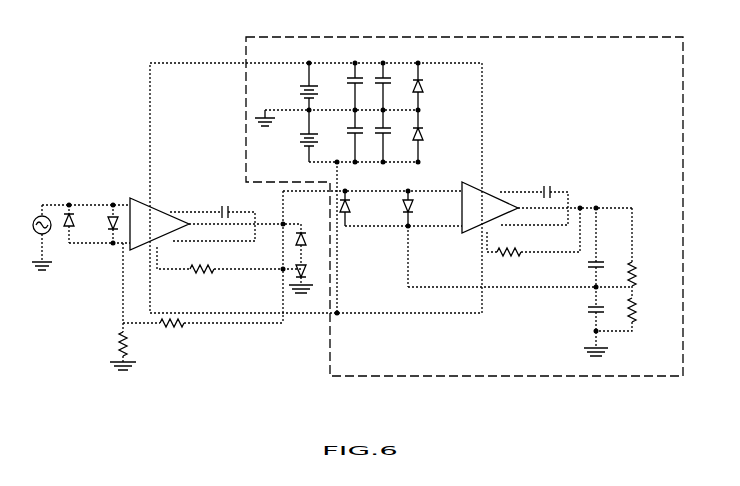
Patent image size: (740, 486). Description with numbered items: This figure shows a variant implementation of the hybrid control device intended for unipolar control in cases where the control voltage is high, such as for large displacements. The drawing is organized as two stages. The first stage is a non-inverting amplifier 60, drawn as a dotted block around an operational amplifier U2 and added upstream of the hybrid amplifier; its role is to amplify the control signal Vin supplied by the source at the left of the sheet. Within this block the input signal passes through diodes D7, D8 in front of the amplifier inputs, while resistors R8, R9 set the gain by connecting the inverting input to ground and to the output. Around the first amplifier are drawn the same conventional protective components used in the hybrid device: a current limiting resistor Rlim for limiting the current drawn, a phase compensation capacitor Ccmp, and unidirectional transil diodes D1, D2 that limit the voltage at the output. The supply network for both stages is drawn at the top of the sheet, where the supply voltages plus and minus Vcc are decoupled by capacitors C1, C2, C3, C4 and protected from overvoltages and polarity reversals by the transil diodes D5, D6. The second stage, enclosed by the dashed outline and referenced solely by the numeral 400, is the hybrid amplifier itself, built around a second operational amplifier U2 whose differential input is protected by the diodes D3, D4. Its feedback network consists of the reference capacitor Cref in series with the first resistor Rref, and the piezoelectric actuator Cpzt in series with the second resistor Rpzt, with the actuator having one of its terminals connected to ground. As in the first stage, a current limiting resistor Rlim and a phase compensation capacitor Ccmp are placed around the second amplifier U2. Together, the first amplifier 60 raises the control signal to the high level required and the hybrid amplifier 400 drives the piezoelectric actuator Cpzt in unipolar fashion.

The non-inverting amplifier 60 is at (352, 229).
The hybrid amplifier 400 is at (464, 206).
The operational amplifier U2 is at (312, 223).
The capacitor C1 is at (392, 86).
The capacitor C2 is at (343, 86).
The capacitor C3 is at (344, 136).
The capacitor C4 is at (392, 136).
The unidirectional transil diode D1 is at (310, 241).
The unidirectional transil diode D2 is at (310, 273).
The diode D3 is at (357, 208).
The diode D4 is at (421, 208).
The transil diode D5 is at (432, 86).
The transil diode D6 is at (432, 136).
The diode D7 is at (79, 222).
The diode D8 is at (103, 229).
The resistor R8 is at (111, 344).
The resistor R9 is at (171, 334).
The current limiting resistor Rlim is at (368, 251).
The phase compensation capacitor Ccmp is at (372, 213).
The reference capacitor Cref is at (581, 247).
The piezoelectric actuator Cpzt is at (580, 304).
The first resistor Rref is at (649, 274).
The second resistor Rpzt is at (650, 310).